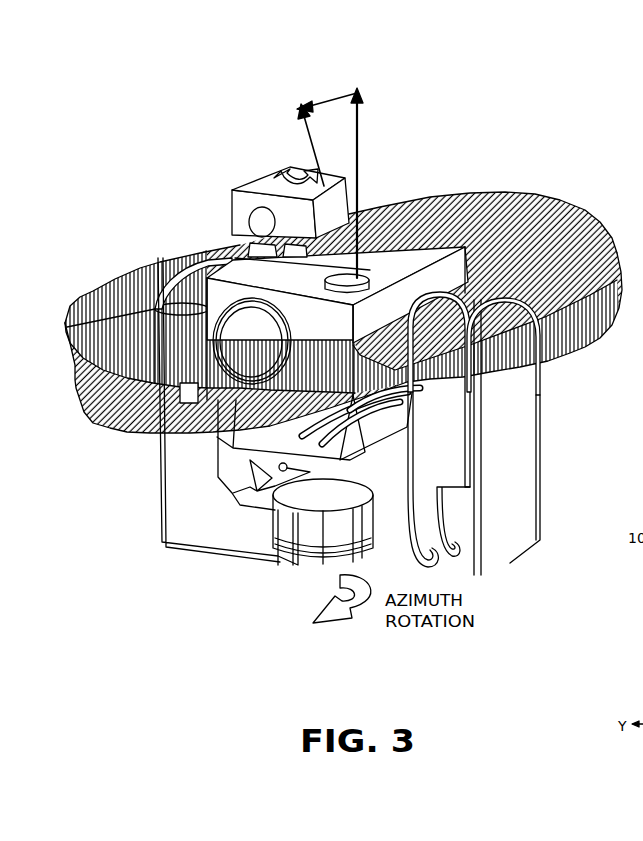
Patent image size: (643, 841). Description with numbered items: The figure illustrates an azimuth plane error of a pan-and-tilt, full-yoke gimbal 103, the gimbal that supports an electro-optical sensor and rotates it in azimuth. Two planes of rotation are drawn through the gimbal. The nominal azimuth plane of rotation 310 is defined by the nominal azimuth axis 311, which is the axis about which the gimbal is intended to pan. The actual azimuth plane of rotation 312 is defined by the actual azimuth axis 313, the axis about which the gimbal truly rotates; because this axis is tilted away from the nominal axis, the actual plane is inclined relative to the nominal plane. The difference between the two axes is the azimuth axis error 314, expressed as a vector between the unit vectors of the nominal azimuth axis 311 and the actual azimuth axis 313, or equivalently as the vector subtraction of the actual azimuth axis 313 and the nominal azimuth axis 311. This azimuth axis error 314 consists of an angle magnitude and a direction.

The pan-and-tilt full-yoke gimbal 103 is at (157, 474).
The nominal azimuth plane of rotation 310 is at (604, 340).
The nominal azimuth axis 311 is at (360, 128).
The actual azimuth plane of rotation 312 is at (560, 197).
The actual azimuth axis 313 is at (308, 148).
The azimuth axis error 314 is at (320, 94).